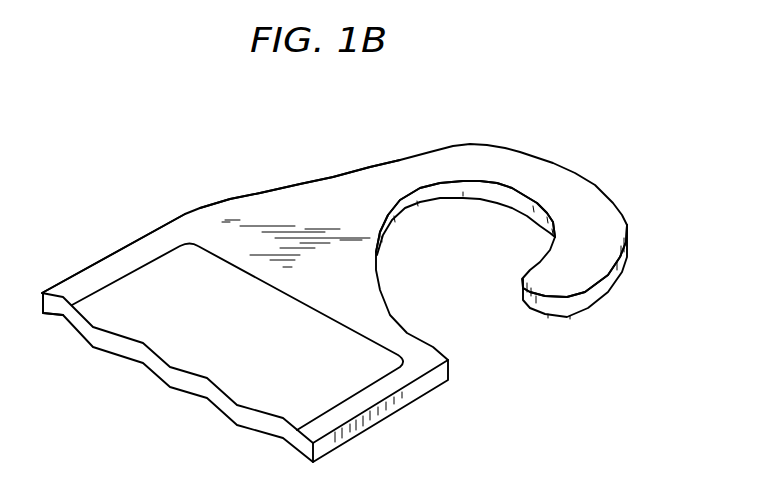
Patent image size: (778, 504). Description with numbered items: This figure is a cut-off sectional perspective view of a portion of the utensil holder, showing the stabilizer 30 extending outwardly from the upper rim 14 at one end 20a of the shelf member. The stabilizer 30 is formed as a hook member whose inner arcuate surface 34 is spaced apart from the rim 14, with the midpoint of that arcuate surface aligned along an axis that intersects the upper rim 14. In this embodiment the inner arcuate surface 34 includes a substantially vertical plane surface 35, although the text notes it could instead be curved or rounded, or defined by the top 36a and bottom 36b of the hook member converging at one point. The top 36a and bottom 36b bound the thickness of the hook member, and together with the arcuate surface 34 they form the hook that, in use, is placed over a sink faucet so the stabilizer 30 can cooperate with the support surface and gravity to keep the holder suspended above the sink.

The stabilizer 30 is at (652, 160).
The rim 14 is at (142, 252).
The first end 20a is at (262, 320).
The top of the hook member 36a is at (320, 189).
The bottom of the hook member 36b is at (408, 218).
The inner arcuate surface 34 is at (517, 213).
The substantially vertical plane surface 35 is at (496, 192).